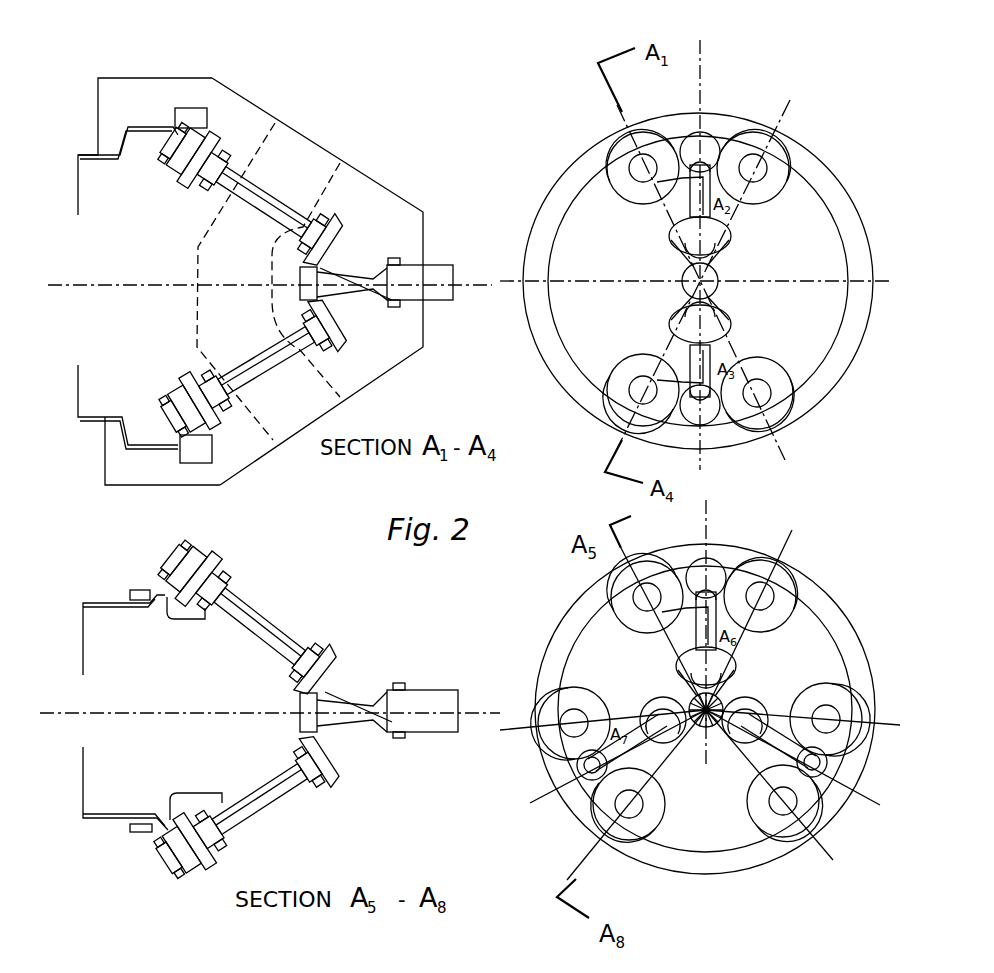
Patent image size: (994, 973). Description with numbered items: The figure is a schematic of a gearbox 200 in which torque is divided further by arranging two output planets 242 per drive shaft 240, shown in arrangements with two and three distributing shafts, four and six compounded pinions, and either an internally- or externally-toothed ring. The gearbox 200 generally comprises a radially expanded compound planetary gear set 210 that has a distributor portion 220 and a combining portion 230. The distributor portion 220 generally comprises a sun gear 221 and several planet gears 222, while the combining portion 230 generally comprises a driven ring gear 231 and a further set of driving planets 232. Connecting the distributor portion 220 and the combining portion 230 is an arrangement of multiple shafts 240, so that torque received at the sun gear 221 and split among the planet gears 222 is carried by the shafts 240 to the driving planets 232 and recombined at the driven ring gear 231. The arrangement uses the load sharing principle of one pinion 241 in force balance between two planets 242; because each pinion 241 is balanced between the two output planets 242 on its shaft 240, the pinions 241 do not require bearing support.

The gearbox 200 is at (303, 135).
The radially expanded compound planetary gear set 210 is at (167, 453).
The distributor portion 220 is at (383, 182).
The sun gear 221 is at (330, 266).
The planet gears 222 is at (340, 340).
The combining portion 230 is at (176, 78).
The driven ring gear 231 is at (137, 663).
The driving planets 232 is at (158, 173).
The shafts 240 is at (243, 213).
The pinion 241 is at (702, 138).
The output planets 242 is at (218, 140).